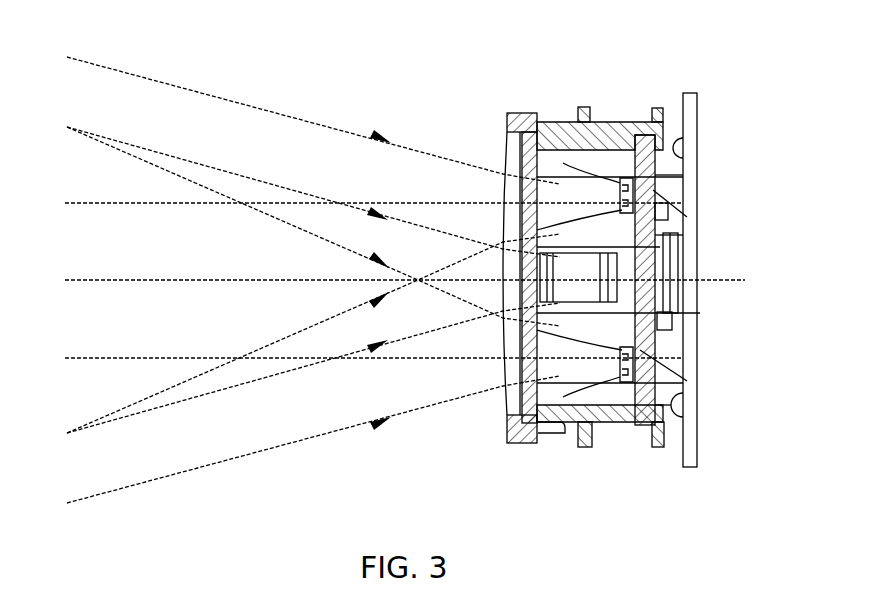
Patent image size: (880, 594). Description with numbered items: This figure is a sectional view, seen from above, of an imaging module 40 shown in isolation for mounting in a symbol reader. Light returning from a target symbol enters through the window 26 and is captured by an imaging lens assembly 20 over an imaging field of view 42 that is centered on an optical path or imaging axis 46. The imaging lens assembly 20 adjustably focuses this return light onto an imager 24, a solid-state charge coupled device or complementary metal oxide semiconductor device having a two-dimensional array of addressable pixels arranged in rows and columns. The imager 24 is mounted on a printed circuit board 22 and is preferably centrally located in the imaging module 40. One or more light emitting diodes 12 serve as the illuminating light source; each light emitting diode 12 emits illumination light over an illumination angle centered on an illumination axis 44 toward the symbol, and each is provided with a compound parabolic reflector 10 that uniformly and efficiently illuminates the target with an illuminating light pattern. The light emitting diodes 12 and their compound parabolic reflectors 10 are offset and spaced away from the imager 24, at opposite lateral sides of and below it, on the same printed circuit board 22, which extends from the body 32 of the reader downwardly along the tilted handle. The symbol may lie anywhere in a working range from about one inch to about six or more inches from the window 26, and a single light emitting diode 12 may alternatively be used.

The imaging module 40 is at (678, 44).
The compound parabolic reflector 10 is at (563, 165).
The light emitting diode 12 is at (700, 217).
The imaging lens assembly 20 is at (672, 322).
The printed circuit board 22 is at (686, 414).
The imager 24 is at (668, 290).
The window 26 is at (530, 130).
The body 32 is at (520, 444).
The imaging field of view 42 is at (114, 120).
The illumination axis 44 is at (98, 203).
The imaging axis 46 is at (98, 280).